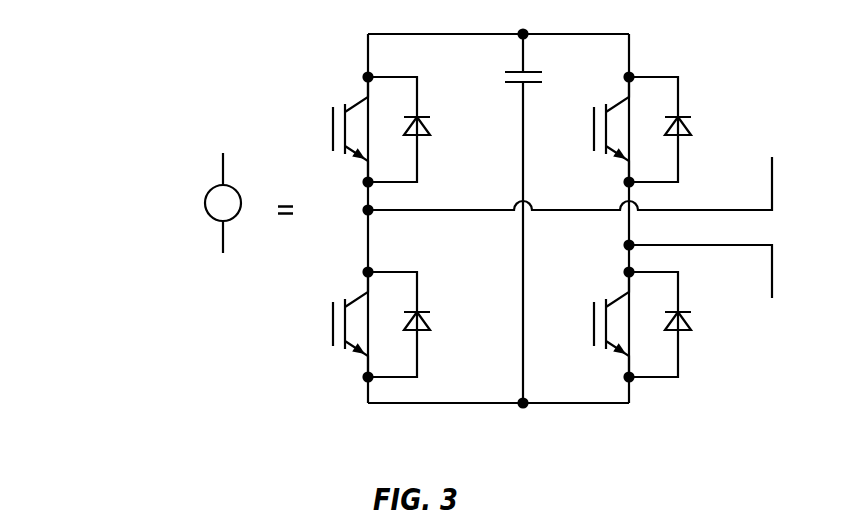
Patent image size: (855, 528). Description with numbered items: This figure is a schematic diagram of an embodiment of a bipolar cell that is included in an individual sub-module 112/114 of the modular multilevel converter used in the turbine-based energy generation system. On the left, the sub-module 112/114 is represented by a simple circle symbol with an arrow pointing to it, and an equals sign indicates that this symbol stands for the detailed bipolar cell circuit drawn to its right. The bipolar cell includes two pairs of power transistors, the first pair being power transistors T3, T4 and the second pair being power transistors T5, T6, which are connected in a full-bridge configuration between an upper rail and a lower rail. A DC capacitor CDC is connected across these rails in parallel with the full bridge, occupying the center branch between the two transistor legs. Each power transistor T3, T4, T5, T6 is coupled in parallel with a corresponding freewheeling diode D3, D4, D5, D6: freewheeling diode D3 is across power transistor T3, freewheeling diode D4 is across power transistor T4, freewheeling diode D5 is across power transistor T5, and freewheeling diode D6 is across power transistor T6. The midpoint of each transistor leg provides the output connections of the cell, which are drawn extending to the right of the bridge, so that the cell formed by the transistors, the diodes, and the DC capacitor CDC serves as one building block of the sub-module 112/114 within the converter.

The individual sub-module 112 is at (134, 203).
The individual sub-module 114 is at (158, 199).
The power transistor T3 is at (333, 130).
The power transistor T4 is at (333, 325).
The power transistor T5 is at (594, 130).
The power transistor T6 is at (592, 325).
The freewheeling diode D3 is at (419, 129).
The freewheeling diode D4 is at (419, 324).
The freewheeling diode D5 is at (679, 129).
The freewheeling diode D6 is at (679, 324).
The DC capacitor CDC is at (497, 218).